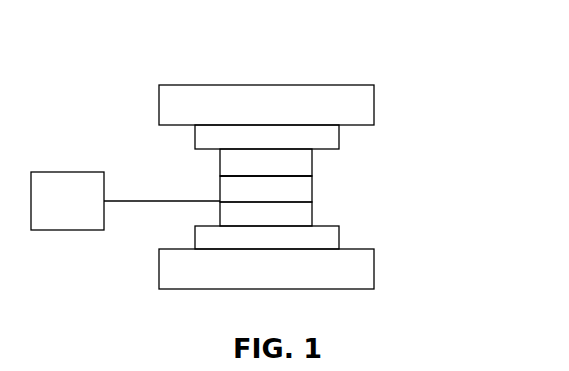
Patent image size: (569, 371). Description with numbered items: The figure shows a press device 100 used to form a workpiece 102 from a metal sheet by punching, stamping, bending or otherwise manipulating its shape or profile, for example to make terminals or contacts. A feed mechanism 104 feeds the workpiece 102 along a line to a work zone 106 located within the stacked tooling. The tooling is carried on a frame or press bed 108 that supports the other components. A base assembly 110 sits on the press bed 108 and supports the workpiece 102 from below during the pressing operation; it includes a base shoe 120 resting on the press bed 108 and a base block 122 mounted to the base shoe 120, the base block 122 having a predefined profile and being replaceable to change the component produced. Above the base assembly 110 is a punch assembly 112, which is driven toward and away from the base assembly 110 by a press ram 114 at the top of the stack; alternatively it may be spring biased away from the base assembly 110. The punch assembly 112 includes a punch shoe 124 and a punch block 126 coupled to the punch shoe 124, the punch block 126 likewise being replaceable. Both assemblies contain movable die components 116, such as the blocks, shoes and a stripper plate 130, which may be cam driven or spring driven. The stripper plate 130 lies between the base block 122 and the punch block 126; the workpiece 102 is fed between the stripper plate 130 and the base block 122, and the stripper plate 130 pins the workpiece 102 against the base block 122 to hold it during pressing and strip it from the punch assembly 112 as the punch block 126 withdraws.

The press device 100 is at (462, 51).
The workpiece 102 is at (142, 201).
The feed mechanism 104 is at (52, 232).
The work zone 106 is at (312, 178).
The press bed 108 is at (374, 270).
The base assembly 110 is at (387, 212).
The punch assembly 112 is at (374, 141).
The press ram 114 is at (374, 106).
The movable die components 116 is at (196, 188).
The base shoe 120 is at (339, 237).
The base block 122 is at (312, 210).
The punch shoe 124 is at (195, 138).
The punch block 126 is at (220, 158).
The stripper plate 130 is at (320, 184).